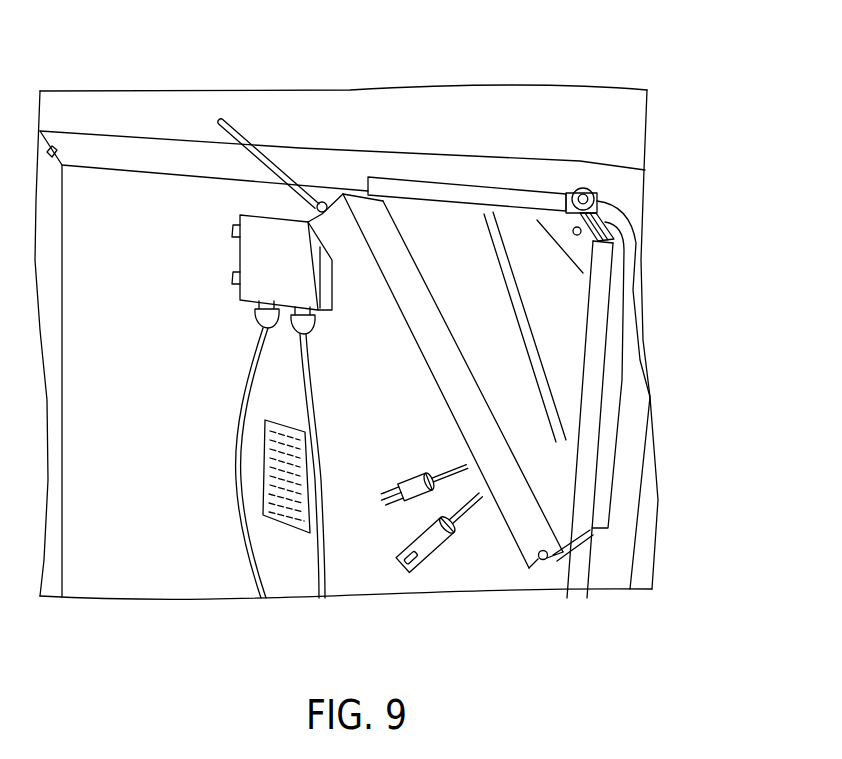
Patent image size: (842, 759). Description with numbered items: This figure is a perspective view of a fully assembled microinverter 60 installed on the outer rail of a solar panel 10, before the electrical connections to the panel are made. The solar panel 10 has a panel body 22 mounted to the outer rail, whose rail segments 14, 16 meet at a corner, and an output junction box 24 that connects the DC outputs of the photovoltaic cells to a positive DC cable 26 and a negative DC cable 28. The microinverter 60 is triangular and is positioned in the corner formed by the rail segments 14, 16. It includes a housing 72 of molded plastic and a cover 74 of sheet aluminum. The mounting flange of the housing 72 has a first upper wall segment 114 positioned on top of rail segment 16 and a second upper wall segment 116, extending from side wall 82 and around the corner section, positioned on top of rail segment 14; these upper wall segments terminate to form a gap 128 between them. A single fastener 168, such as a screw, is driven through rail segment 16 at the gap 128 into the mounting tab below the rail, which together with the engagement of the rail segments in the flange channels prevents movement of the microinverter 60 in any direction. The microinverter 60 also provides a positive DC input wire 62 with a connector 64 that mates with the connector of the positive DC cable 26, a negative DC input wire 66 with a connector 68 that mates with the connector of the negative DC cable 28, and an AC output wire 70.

The solar panel 10 is at (720, 83).
The rail segment 14 is at (637, 298).
The rail segment 16 is at (111, 135).
The panel body 22 is at (155, 408).
The output junction box 24 is at (232, 282).
The positive DC cable 26 is at (246, 560).
The negative DC cable 28 is at (322, 480).
The microinverter 60 is at (552, 458).
The positive DC input wire 62 is at (474, 512).
The connector 64 is at (407, 578).
The negative DC input wire 66 is at (442, 478).
The connector 68 is at (395, 510).
The AC output wire 70 is at (225, 120).
The housing 72 is at (607, 430).
The cover 74 is at (398, 337).
The side wall 82 is at (591, 410).
The first upper wall segment 114 is at (436, 190).
The second upper wall segment 116 is at (615, 350).
The gap 128 is at (599, 194).
The fastener 168 is at (577, 189).